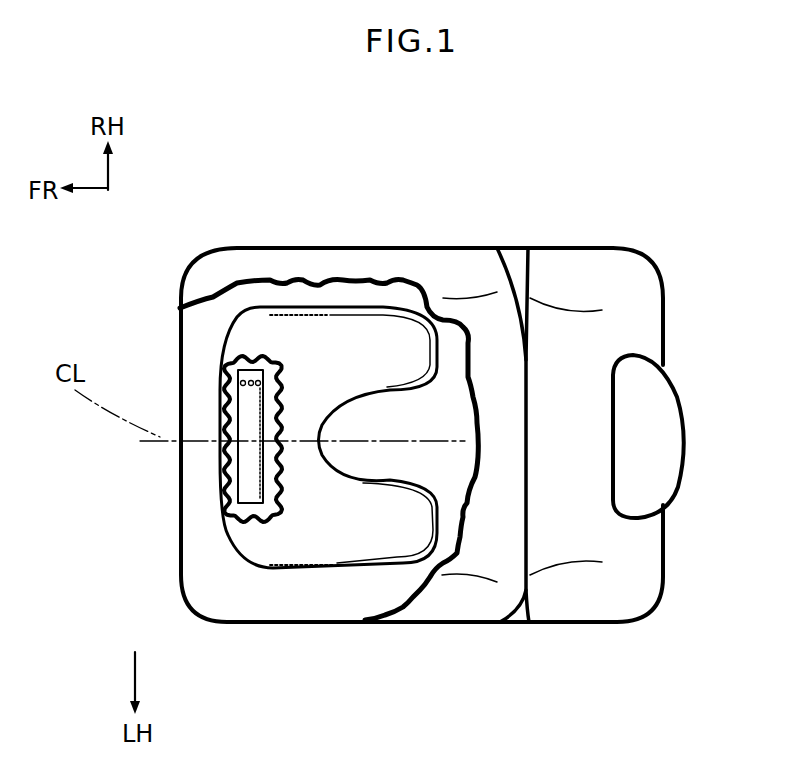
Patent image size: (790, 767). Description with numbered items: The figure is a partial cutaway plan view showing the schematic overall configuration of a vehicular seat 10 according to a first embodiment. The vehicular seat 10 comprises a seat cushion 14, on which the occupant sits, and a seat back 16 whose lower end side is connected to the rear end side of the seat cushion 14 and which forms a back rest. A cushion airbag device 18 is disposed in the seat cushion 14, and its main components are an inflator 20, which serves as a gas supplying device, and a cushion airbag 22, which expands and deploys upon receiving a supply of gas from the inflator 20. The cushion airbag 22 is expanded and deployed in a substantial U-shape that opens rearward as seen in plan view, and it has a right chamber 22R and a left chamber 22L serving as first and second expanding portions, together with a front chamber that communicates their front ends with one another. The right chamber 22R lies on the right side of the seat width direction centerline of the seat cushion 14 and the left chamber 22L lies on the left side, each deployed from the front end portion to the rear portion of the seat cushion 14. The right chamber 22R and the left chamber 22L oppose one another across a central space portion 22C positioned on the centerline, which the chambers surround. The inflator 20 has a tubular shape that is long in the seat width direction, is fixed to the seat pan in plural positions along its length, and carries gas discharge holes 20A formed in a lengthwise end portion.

The vehicular seat 10 is at (258, 229).
The seat cushion 14 is at (461, 277).
The seat back 16 is at (577, 270).
The cushion airbag device 18 is at (226, 310).
The inflator 20 is at (247, 478).
The gas discharge holes 20A is at (250, 384).
The cushion airbag 22 is at (376, 308).
The right chamber 22R is at (337, 340).
The left chamber 22L is at (300, 543).
The central space portion 22C is at (440, 433).